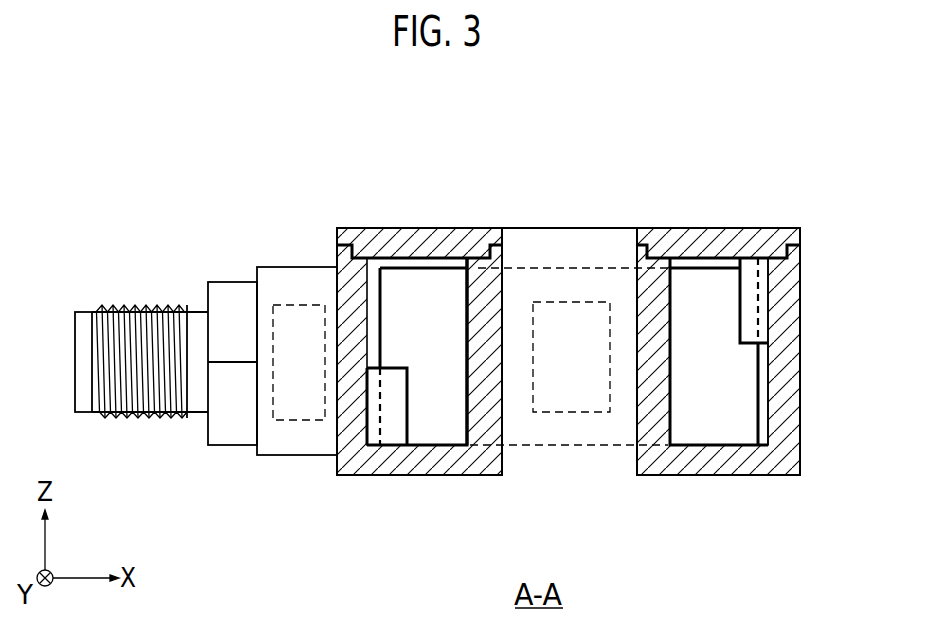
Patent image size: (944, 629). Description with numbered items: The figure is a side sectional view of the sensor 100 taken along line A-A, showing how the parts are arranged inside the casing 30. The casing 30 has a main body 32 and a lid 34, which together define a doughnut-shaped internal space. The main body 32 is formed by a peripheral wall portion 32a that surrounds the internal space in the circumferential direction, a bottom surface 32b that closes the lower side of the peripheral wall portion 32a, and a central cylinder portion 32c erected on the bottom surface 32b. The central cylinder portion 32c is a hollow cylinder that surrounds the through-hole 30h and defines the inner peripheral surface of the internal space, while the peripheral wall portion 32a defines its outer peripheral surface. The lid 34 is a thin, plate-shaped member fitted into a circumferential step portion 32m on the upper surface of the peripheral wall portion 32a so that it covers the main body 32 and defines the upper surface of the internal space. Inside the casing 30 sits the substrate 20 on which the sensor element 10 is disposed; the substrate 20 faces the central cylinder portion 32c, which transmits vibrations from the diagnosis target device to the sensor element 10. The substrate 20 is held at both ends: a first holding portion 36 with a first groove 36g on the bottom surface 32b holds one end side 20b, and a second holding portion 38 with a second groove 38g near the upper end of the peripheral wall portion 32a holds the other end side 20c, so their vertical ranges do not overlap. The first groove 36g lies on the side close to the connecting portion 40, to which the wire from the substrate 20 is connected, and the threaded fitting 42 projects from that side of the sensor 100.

The sensor 100 is at (597, 102).
The sensor element 10 is at (570, 412).
The substrate 20 is at (436, 292).
The one end side of the substrate 20b is at (388, 355).
The other end side of the substrate 20c is at (750, 363).
The casing 30 is at (568, 404).
The through-hole 30h is at (637, 290).
The main body 32 is at (690, 481).
The peripheral wall portion 32a is at (790, 393).
The bottom surface 32b is at (446, 462).
The central cylinder portion 32c is at (480, 405).
The circumferential step portion 32m is at (787, 253).
The lid 34 is at (460, 230).
The first holding portion 36 is at (396, 412).
The first groove 36g is at (368, 447).
The second holding portion 38 is at (750, 268).
The second groove 38g is at (763, 283).
The connecting portion 40 is at (303, 305).
The threaded connector 42 is at (198, 327).